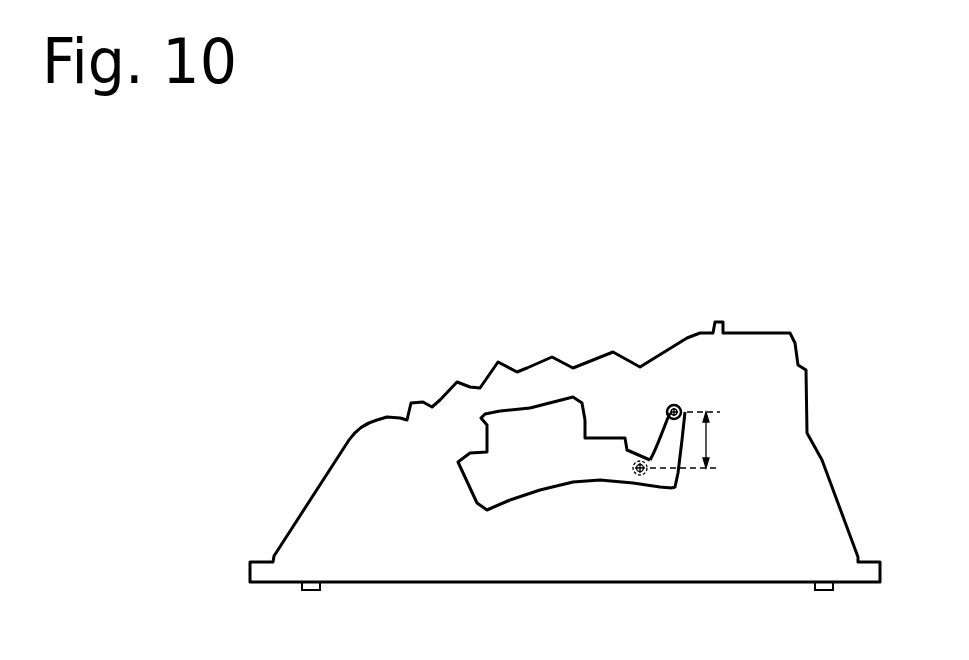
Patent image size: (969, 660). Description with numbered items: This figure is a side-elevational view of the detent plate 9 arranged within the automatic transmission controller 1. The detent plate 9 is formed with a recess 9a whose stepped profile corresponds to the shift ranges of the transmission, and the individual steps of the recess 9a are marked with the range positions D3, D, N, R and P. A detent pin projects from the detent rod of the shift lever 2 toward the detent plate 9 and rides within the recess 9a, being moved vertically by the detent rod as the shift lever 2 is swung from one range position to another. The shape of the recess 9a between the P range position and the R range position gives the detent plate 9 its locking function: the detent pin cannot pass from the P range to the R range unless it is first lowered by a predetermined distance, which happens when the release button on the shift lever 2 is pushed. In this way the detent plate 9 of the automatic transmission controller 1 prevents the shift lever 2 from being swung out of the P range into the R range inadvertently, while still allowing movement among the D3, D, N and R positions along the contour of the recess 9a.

The detent plate 9 is at (817, 448).
The recess 9a is at (593, 477).
The shift lever 2 is at (470, 460).
The D3 range D3 is at (488, 432).
The D range D is at (528, 420).
The N range N is at (570, 417).
The R range R is at (620, 443).
The P range P is at (677, 427).
The automatic transmission controller 1 is at (691, 440).